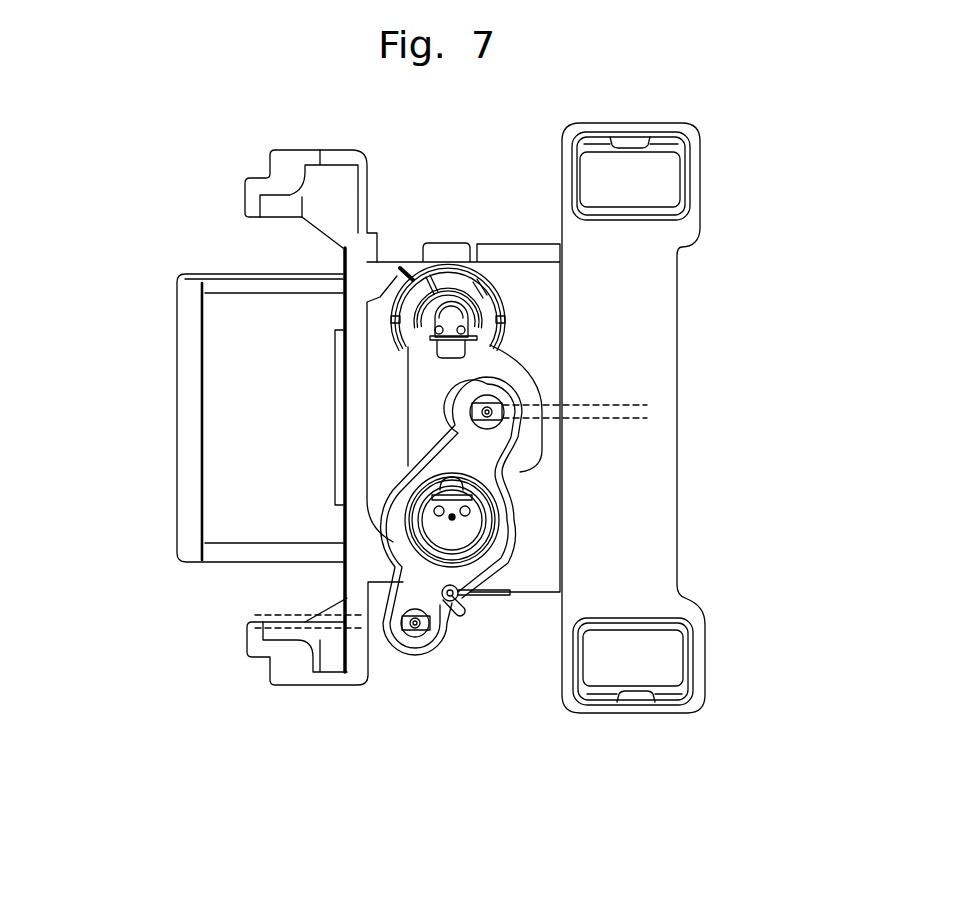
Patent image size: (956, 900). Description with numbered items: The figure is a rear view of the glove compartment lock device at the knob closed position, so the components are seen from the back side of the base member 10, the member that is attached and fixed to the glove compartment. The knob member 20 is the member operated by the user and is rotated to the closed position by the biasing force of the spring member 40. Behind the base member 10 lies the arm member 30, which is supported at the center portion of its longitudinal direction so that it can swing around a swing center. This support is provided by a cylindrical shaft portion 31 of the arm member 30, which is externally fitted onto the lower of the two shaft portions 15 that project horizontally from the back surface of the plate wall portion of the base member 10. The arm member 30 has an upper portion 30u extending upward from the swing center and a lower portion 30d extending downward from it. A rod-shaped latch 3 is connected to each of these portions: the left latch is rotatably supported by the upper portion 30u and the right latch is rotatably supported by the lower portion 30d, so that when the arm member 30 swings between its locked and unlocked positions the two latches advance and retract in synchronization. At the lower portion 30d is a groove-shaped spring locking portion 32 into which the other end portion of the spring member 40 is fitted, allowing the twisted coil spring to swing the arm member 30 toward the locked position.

The latch 3 is at (598, 405).
The base member 10 is at (534, 262).
The shaft portion 15 is at (432, 508).
The knob member 20 is at (222, 346).
The arm member 30 is at (446, 580).
The upper portion 30u is at (482, 455).
The lower portion 30d is at (415, 577).
The shaft portion 31 is at (405, 520).
The spring locking portion 32 is at (458, 606).
The spring member 40 is at (468, 590).